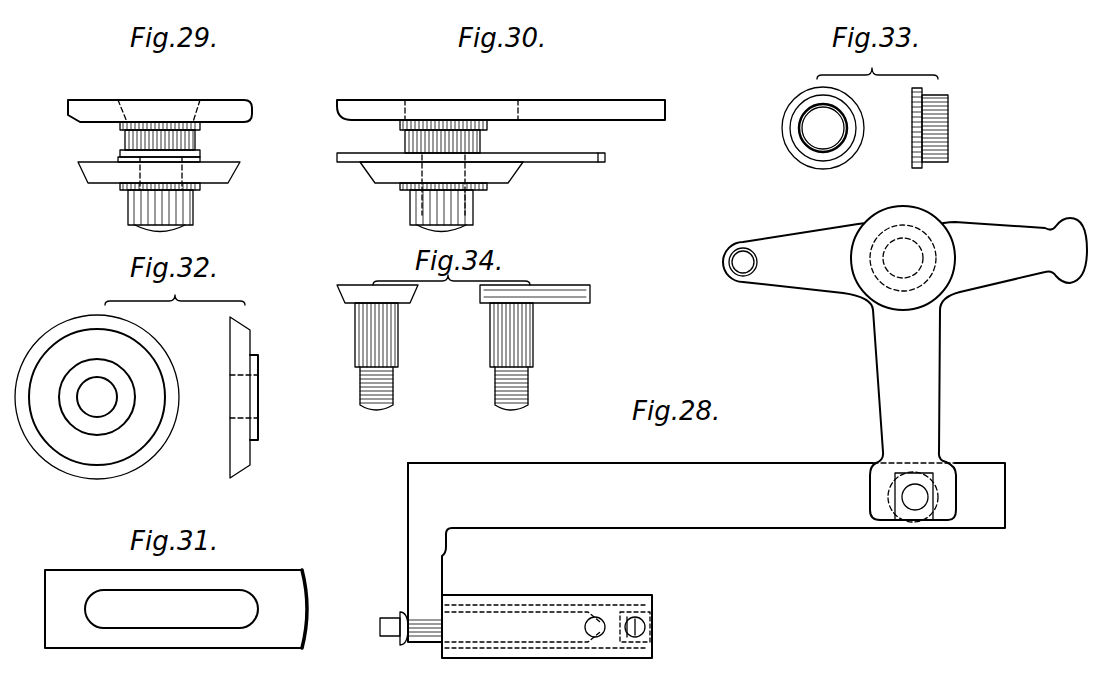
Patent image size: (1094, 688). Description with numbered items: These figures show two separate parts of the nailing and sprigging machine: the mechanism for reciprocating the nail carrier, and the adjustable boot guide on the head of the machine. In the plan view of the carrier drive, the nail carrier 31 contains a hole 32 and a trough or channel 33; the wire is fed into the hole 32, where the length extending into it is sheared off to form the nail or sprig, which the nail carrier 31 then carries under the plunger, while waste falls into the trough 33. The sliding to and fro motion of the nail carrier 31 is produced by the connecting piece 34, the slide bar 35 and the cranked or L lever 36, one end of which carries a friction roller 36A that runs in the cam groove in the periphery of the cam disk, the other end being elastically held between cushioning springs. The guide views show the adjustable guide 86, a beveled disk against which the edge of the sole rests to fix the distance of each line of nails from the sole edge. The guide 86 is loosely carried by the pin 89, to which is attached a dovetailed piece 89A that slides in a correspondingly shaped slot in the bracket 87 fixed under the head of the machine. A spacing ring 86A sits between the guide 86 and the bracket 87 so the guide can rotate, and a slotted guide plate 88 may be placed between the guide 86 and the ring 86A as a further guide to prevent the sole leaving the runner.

In FIG. 28, the nail carrier 31 is at (547, 626).
In FIG. 28, the hole 32 is at (650, 628).
In FIG. 28, the trough or channel 33 is at (586, 627).
In FIG. 28, the connecting piece 34 is at (413, 554).
In FIG. 28, the slide bar 35 is at (706, 498).
In FIG. 28, the cranked or L lever 36 is at (905, 364).
In FIG. 28, the friction roller 36A is at (743, 272).
In FIG. 29, the adjustable guide 86 is at (228, 177).
In FIG. 30, the adjustable guide 86 is at (503, 178).
In FIG. 32, the adjustable guide 86 is at (250, 326).
In FIG. 29, the spacing ring 86A is at (198, 147).
In FIG. 30, the spacing ring 86A is at (482, 141).
In FIG. 33, the spacing ring 86A is at (958, 110).
In FIG. 29, the bracket 87 is at (243, 117).
In FIG. 30, the bracket 87 is at (602, 107).
In FIG. 29, the slotted guide plate 88 is at (118, 159).
In FIG. 30, the slotted guide plate 88 is at (578, 162).
In FIG. 31, the slotted guide plate 88 is at (176, 609).
In FIG. 29, the pin 89 is at (170, 208).
In FIG. 30, the pin 89 is at (410, 217).
In FIG. 34, the pin 89 is at (398, 342).
In FIG. 29, the dovetailed piece 89A is at (137, 95).
In FIG. 30, the dovetailed piece 89A is at (468, 107).
In FIG. 34, the dovetailed piece 89A is at (623, 296).